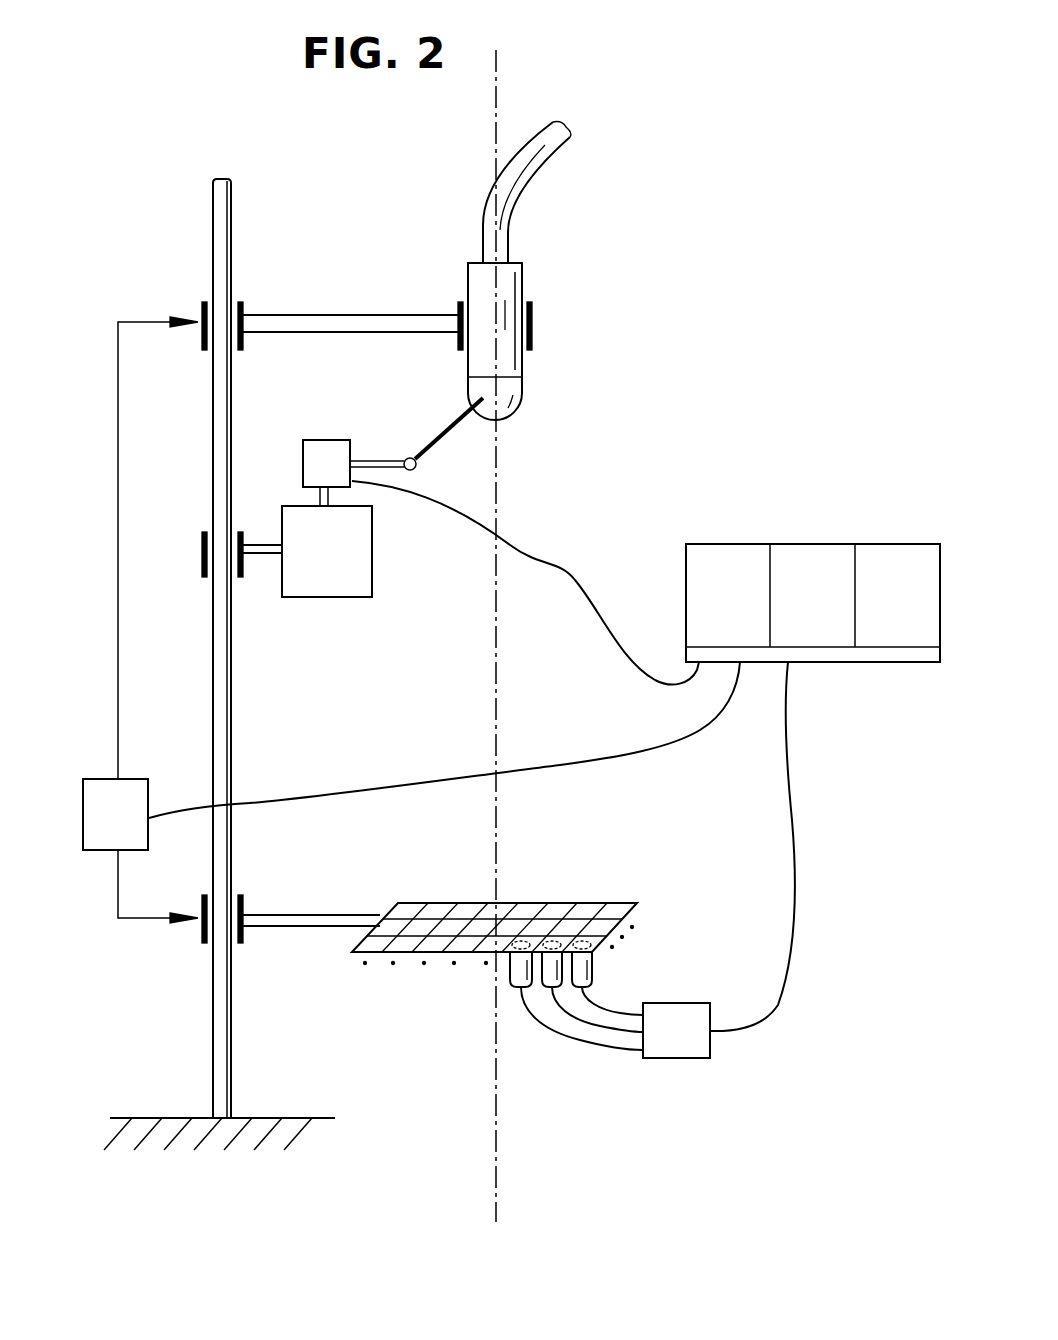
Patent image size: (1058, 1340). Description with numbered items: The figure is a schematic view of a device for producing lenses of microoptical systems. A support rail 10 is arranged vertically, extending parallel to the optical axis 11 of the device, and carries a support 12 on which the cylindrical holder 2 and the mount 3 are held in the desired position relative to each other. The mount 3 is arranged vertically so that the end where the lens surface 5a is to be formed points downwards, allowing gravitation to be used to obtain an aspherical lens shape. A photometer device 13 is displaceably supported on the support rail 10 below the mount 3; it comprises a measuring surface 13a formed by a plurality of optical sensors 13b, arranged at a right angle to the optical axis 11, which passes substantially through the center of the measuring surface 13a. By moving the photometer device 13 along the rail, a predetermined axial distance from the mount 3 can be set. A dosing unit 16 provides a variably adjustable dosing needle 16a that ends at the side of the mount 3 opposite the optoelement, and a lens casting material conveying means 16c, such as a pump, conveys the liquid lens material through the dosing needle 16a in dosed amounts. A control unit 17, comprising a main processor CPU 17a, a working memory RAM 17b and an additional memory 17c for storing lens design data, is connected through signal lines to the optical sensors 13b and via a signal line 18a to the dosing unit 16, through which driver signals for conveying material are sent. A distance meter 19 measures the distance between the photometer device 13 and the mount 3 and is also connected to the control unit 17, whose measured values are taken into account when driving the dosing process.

The cylindrical holder 2 is at (505, 243).
The mount 3 is at (508, 287).
The lens surface 5a is at (525, 393).
The support rail 10 is at (222, 585).
The optical axis 11 is at (496, 88).
The support 12 is at (352, 315).
The photometer device 13 is at (531, 940).
The measuring surface 13a is at (422, 925).
The optical sensors 13b is at (594, 975).
The dosing unit 16 is at (363, 532).
The dosing needle 16a is at (445, 432).
The lens casting material conveying means 16c is at (323, 465).
The control unit 17 is at (813, 588).
The main processor CPU 17a is at (725, 560).
The working memory RAM 17b is at (815, 560).
The additional memory 17c is at (900, 570).
The signal line 18a is at (585, 565).
The distance meter 19 is at (105, 828).